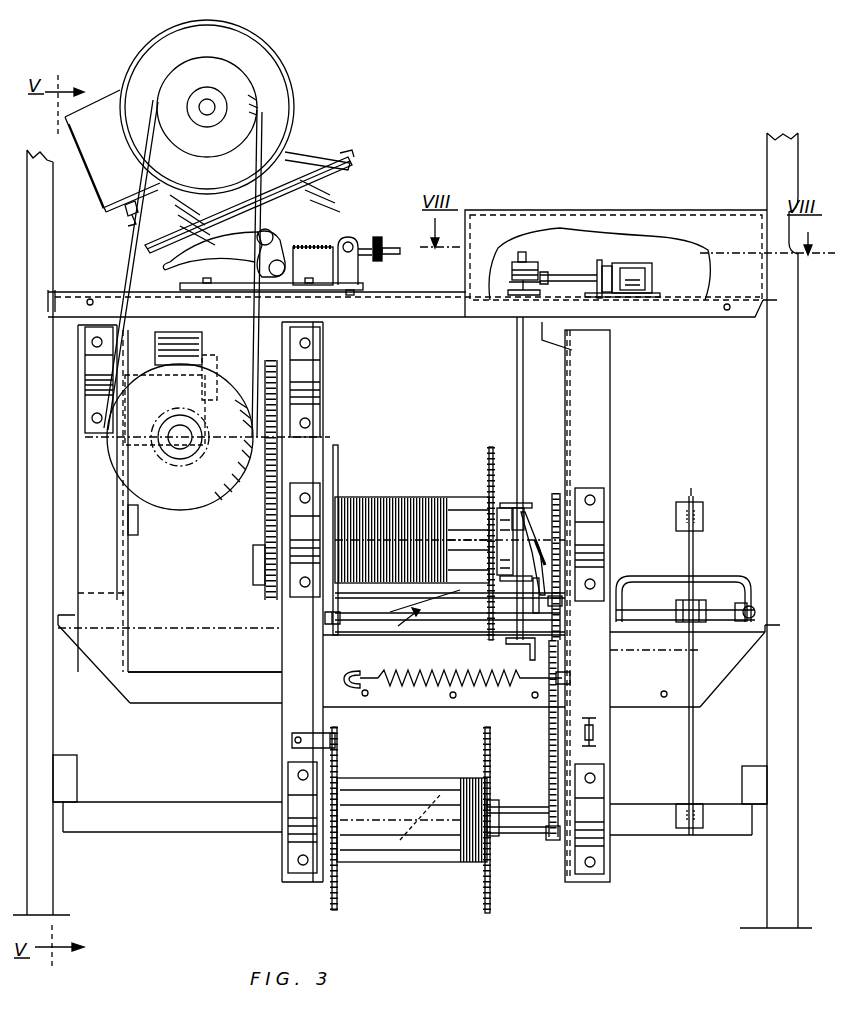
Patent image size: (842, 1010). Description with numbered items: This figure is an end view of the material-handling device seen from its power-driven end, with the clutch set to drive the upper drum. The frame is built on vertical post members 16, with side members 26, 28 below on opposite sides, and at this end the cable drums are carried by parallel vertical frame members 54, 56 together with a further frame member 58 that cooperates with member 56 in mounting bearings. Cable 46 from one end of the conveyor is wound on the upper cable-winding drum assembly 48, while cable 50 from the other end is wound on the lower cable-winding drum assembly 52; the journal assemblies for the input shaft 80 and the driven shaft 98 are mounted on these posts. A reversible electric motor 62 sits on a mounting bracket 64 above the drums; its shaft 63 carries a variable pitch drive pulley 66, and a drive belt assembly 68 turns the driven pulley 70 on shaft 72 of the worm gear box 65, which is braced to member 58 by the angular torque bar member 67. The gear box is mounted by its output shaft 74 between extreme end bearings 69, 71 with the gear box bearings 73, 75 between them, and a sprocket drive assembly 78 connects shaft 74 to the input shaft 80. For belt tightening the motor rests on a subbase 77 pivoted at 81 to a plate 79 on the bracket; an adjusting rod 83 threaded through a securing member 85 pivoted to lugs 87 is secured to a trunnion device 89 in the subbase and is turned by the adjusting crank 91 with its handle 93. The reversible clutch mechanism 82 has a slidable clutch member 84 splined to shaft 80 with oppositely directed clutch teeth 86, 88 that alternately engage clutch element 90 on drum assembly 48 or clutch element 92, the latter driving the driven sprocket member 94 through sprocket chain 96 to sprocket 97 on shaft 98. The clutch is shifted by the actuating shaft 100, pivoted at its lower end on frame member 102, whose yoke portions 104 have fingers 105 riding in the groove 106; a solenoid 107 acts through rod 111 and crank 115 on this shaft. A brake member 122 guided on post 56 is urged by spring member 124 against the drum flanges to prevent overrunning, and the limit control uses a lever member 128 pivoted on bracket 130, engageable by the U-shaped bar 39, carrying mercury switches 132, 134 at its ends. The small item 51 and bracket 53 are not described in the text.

The vertical post member 16 is at (40, 722).
The side member 26 is at (80, 772).
The side member 28 is at (742, 778).
The U-shaped bar 39 is at (660, 576).
The cable 46 is at (450, 603).
The upper cable-winding drum assembly 48 is at (350, 492).
The cable 50 is at (423, 778).
The pointer 51 is at (390, 620).
The lower cable-winding drum assembly 52 is at (347, 860).
The gusset bracket 53 is at (80, 650).
The vertical frame member 54 is at (608, 378).
The vertical frame member 56 is at (322, 440).
The vertical frame member 58 is at (110, 565).
The reversible electric motor 62 is at (289, 113).
The motor shaft 63 is at (213, 100).
The mounting bracket 64 is at (168, 300).
The worm gear box 65 is at (173, 332).
The variable pitch drive pulley 66 is at (248, 97).
The angular torque bar member 67 is at (146, 520).
The drive belt assembly 68 is at (130, 256).
The extreme end bearing 69 is at (95, 375).
The driven pulley 70 is at (180, 500).
The extreme end bearing 71 is at (318, 362).
The shaft 72 is at (187, 445).
The gear box bearing 73 is at (82, 368).
The output shaft 74 is at (290, 348).
The gear box bearing 75 is at (208, 356).
The subbase 77 is at (340, 175).
The sprocket drive assembly 78 is at (265, 500).
The plate 79 is at (183, 282).
The input shaft 80 is at (253, 548).
The pivot 81 is at (286, 268).
The reversible clutch mechanism 82 is at (542, 610).
The adjusting rod 83 is at (332, 250).
The slidable clutch member 84 is at (528, 508).
The securing member 85 is at (355, 242).
The clutch teeth 86 is at (480, 592).
The lugs 87 is at (360, 270).
The clutch teeth 88 is at (562, 604).
The trunnion device 89 is at (294, 218).
The clutch element 90 is at (500, 520).
The adjusting crank 91 is at (378, 237).
The handle 93 is at (393, 250).
The clutch element 92 is at (570, 460).
The driven sprocket member 94 is at (560, 500).
The sprocket chain 96 is at (549, 776).
The sprocket 97 is at (552, 840).
The driven shaft 98 is at (528, 835).
The actuating shaft 100 is at (517, 370).
The frame member 102 is at (530, 702).
The yoke portion 104 is at (510, 500).
The fingers 105 is at (490, 490).
The groove 106 is at (522, 505).
The solenoid 107 is at (638, 278).
The rod 111 is at (585, 262).
The crank 115 is at (518, 238).
The brake member 122 is at (325, 724).
The spring member 124 is at (420, 698).
The lever member 128 is at (689, 738).
The bracket 130 is at (670, 612).
The mercury switch 132 is at (705, 510).
The mercury switch 134 is at (700, 830).